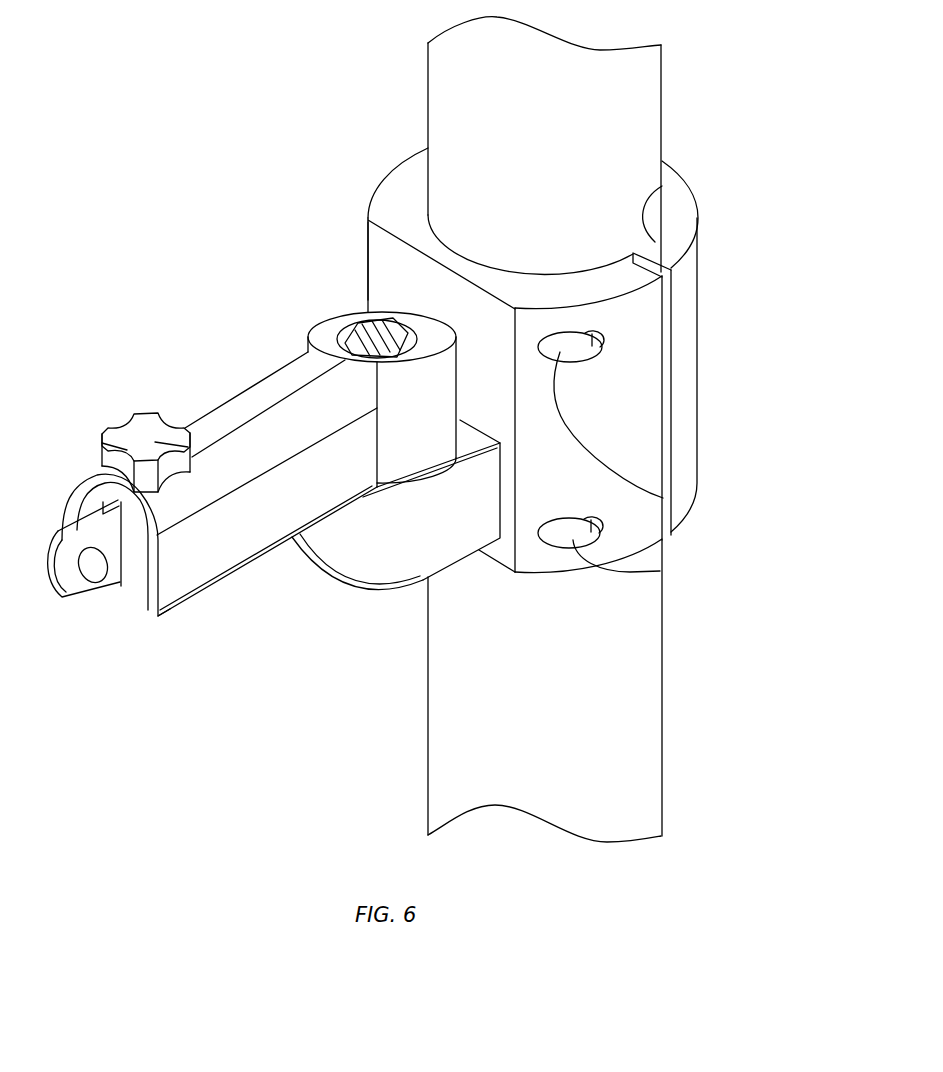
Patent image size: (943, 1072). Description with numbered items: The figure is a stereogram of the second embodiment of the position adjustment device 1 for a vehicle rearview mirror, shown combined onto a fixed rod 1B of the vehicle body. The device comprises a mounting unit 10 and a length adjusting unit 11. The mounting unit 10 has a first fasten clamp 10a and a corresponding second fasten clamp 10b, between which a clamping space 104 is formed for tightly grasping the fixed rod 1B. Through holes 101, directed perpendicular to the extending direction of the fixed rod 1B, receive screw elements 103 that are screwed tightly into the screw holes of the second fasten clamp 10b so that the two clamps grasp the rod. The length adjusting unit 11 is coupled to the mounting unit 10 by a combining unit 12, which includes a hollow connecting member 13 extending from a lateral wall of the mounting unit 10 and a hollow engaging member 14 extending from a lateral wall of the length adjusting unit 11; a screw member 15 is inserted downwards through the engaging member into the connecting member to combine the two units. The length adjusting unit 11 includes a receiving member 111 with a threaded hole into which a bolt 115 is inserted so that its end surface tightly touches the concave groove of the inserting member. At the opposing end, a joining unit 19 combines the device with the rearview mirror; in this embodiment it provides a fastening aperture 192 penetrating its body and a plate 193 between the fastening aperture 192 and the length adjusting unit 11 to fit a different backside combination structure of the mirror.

The position adjustment device 1 is at (210, 238).
The fixed rod 1B is at (605, 700).
The mounting unit 10 is at (559, 391).
The first fasten clamp 10a is at (400, 268).
The second fasten clamp 10b is at (677, 368).
The through holes 101 is at (663, 498).
The screw elements 103 is at (585, 362).
The clamping space 104 is at (648, 228).
The length adjusting unit 11 is at (264, 474).
The receiving member 111 is at (213, 557).
The combining unit 12 is at (292, 277).
The hollow connecting member 13 is at (343, 563).
The hollow engaging member 14 is at (346, 386).
The screw member 15 is at (358, 340).
The bolt 115 is at (137, 437).
The joining unit 19 is at (111, 602).
The fastening aperture 192 is at (87, 599).
The plate 193 is at (132, 588).